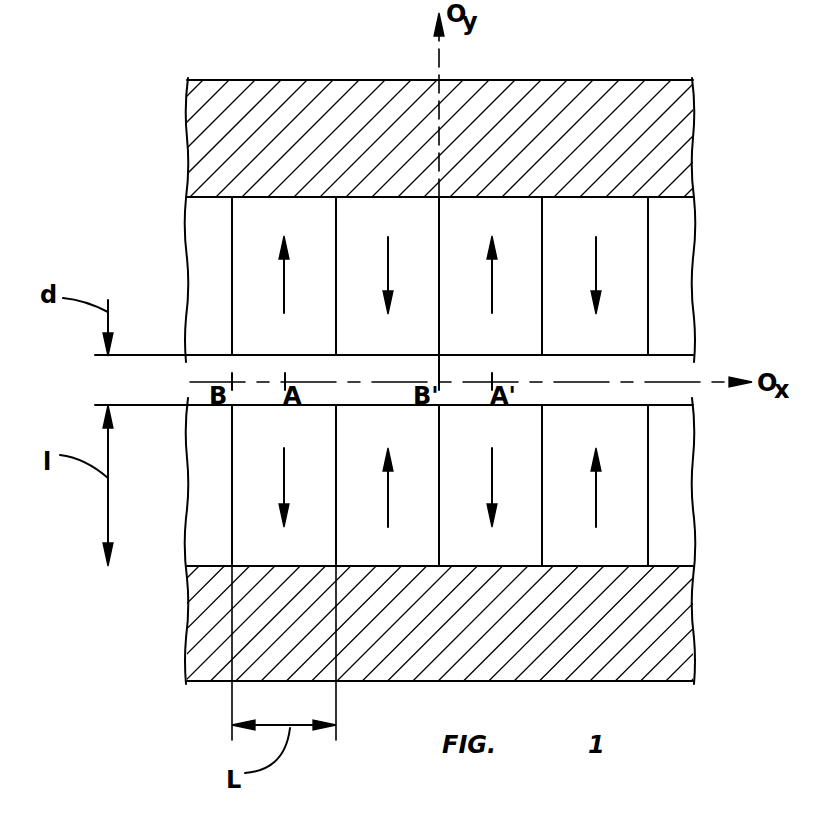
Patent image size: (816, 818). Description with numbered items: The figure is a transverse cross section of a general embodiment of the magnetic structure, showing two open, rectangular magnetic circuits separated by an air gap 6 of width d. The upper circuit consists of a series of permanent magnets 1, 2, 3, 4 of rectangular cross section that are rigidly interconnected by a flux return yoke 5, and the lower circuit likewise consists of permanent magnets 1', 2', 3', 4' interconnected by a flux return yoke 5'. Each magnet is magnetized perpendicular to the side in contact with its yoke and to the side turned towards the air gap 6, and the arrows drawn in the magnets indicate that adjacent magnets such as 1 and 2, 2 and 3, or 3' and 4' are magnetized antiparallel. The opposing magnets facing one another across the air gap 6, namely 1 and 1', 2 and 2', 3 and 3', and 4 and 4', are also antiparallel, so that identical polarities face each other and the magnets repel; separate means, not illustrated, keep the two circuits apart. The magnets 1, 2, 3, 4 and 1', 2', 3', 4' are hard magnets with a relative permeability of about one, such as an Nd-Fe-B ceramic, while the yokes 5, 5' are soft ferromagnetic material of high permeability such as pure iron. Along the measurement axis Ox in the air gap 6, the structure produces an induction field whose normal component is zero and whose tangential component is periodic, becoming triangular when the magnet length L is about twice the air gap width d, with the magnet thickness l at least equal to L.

The permanent magnet 1 is at (232, 274).
The permanent magnet 2 is at (290, 276).
The permanent magnet 3 is at (585, 276).
The permanent magnet 4 is at (646, 276).
The permanent magnet 1' is at (238, 485).
The permanent magnet 2' is at (295, 485).
The permanent magnet 3' is at (588, 485).
The permanent magnet 4' is at (648, 485).
The flux return yoke 5 is at (443, 193).
The flux return yoke 5' is at (445, 545).
The air gap 6 is at (650, 366).